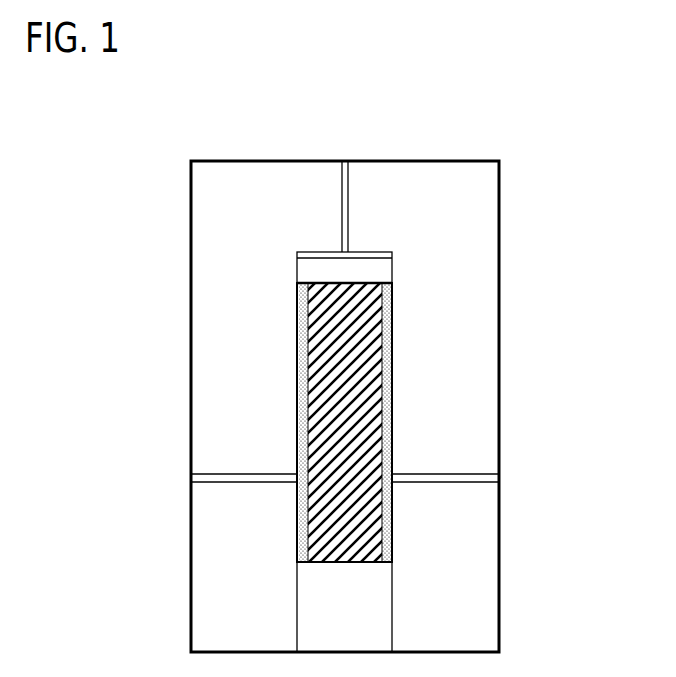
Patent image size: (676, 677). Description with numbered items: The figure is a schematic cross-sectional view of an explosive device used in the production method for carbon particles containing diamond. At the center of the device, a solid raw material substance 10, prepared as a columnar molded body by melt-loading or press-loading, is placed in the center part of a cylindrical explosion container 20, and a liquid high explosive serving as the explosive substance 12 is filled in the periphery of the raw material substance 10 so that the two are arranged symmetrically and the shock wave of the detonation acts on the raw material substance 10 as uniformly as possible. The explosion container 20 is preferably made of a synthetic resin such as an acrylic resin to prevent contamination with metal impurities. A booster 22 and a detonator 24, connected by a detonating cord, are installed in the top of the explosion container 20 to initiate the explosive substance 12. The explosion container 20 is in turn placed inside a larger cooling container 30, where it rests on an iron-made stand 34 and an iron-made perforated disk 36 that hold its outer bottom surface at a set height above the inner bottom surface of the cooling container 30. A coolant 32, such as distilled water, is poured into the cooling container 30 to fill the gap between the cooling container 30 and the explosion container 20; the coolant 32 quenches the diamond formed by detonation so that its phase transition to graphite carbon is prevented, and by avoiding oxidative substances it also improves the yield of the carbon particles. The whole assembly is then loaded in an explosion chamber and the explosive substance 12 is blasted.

The raw material substance 10 is at (385, 362).
The explosive substance 12 is at (387, 407).
The explosion container 20 is at (393, 323).
The booster 22 is at (392, 252).
The detonator 24 is at (349, 210).
The cooling container 30 is at (500, 262).
The coolant 32 is at (462, 542).
The stand 34 is at (393, 605).
The perforated disk 36 is at (437, 474).